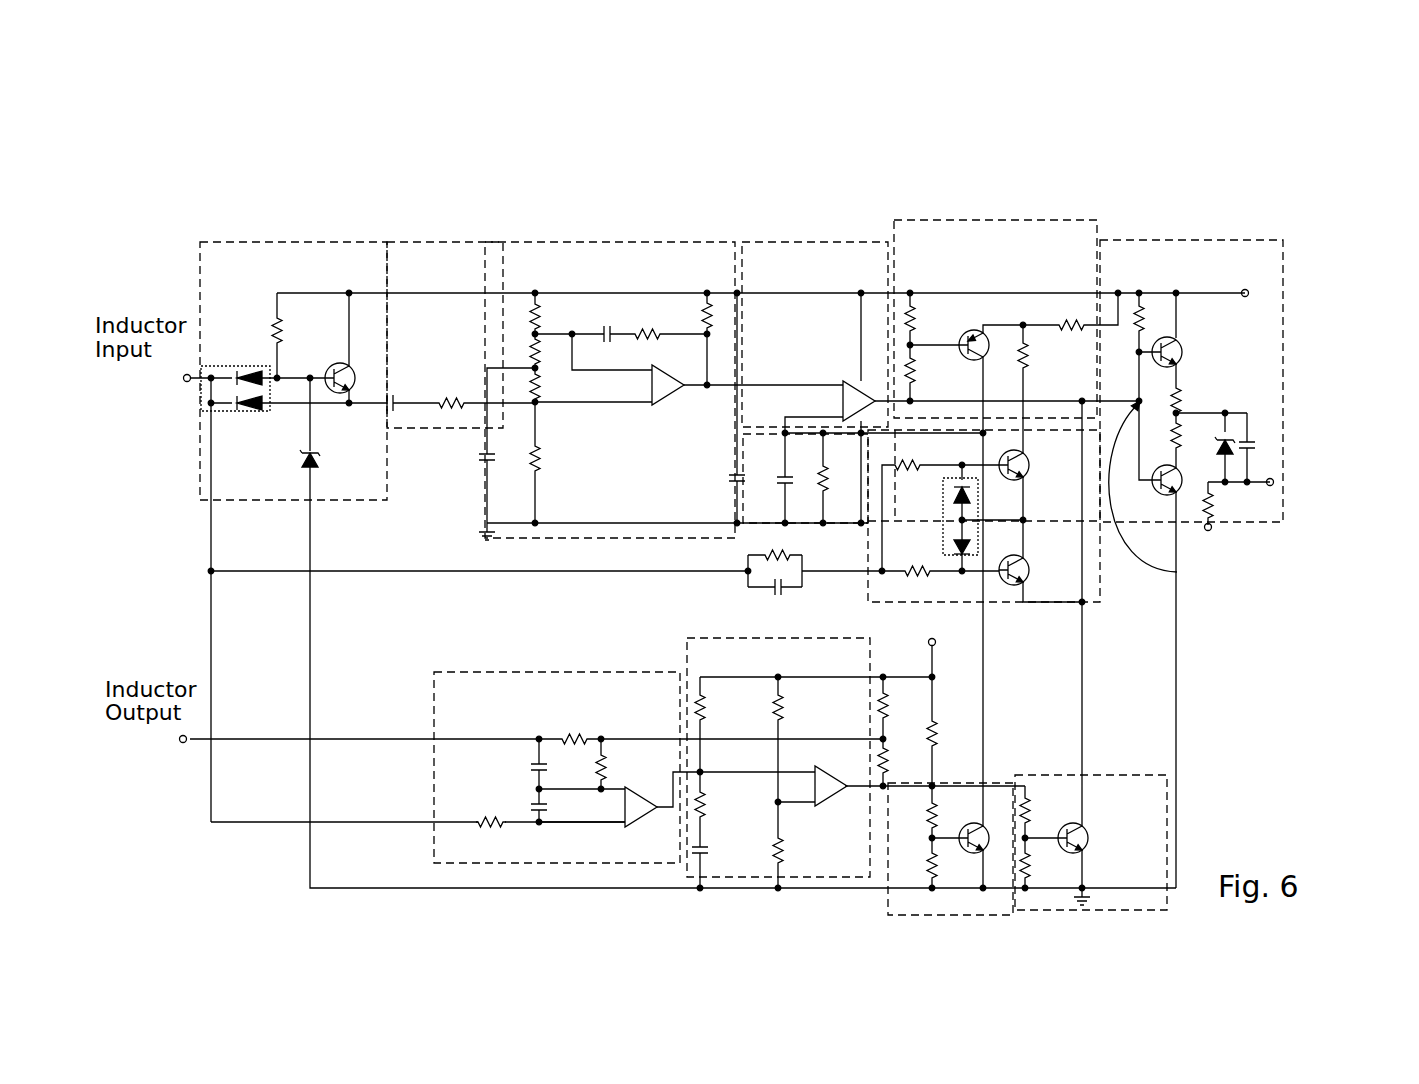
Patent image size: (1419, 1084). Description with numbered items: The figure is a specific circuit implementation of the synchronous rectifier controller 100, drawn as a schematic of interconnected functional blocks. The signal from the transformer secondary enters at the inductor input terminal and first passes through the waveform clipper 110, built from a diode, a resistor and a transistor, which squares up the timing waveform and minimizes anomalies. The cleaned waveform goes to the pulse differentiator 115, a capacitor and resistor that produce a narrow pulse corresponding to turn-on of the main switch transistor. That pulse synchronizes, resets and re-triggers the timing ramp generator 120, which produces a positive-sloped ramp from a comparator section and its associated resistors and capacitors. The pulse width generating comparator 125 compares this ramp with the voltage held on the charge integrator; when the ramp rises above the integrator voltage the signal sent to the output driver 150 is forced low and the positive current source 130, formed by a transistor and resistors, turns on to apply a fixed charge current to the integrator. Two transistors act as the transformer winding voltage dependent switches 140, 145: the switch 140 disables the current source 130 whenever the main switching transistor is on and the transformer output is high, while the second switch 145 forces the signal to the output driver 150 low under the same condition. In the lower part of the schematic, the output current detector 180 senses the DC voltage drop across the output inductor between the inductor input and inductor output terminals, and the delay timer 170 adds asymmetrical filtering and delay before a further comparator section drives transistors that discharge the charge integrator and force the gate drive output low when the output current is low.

The synchronous rectifier controller 100 is at (1218, 172).
The waveform clipper 110 is at (248, 252).
The pulse differentiator 115 is at (410, 252).
The timing ramp generator 120 is at (583, 250).
The pulse width generating comparator 125 is at (793, 240).
The positive current source 130 is at (945, 227).
The transformer winding voltage dependent switch 140 is at (1070, 497).
The second voltage controlled switch 145 is at (1067, 583).
The output driver 150 is at (1120, 253).
The delay timer 170 is at (832, 869).
The output current detector 180 is at (603, 848).